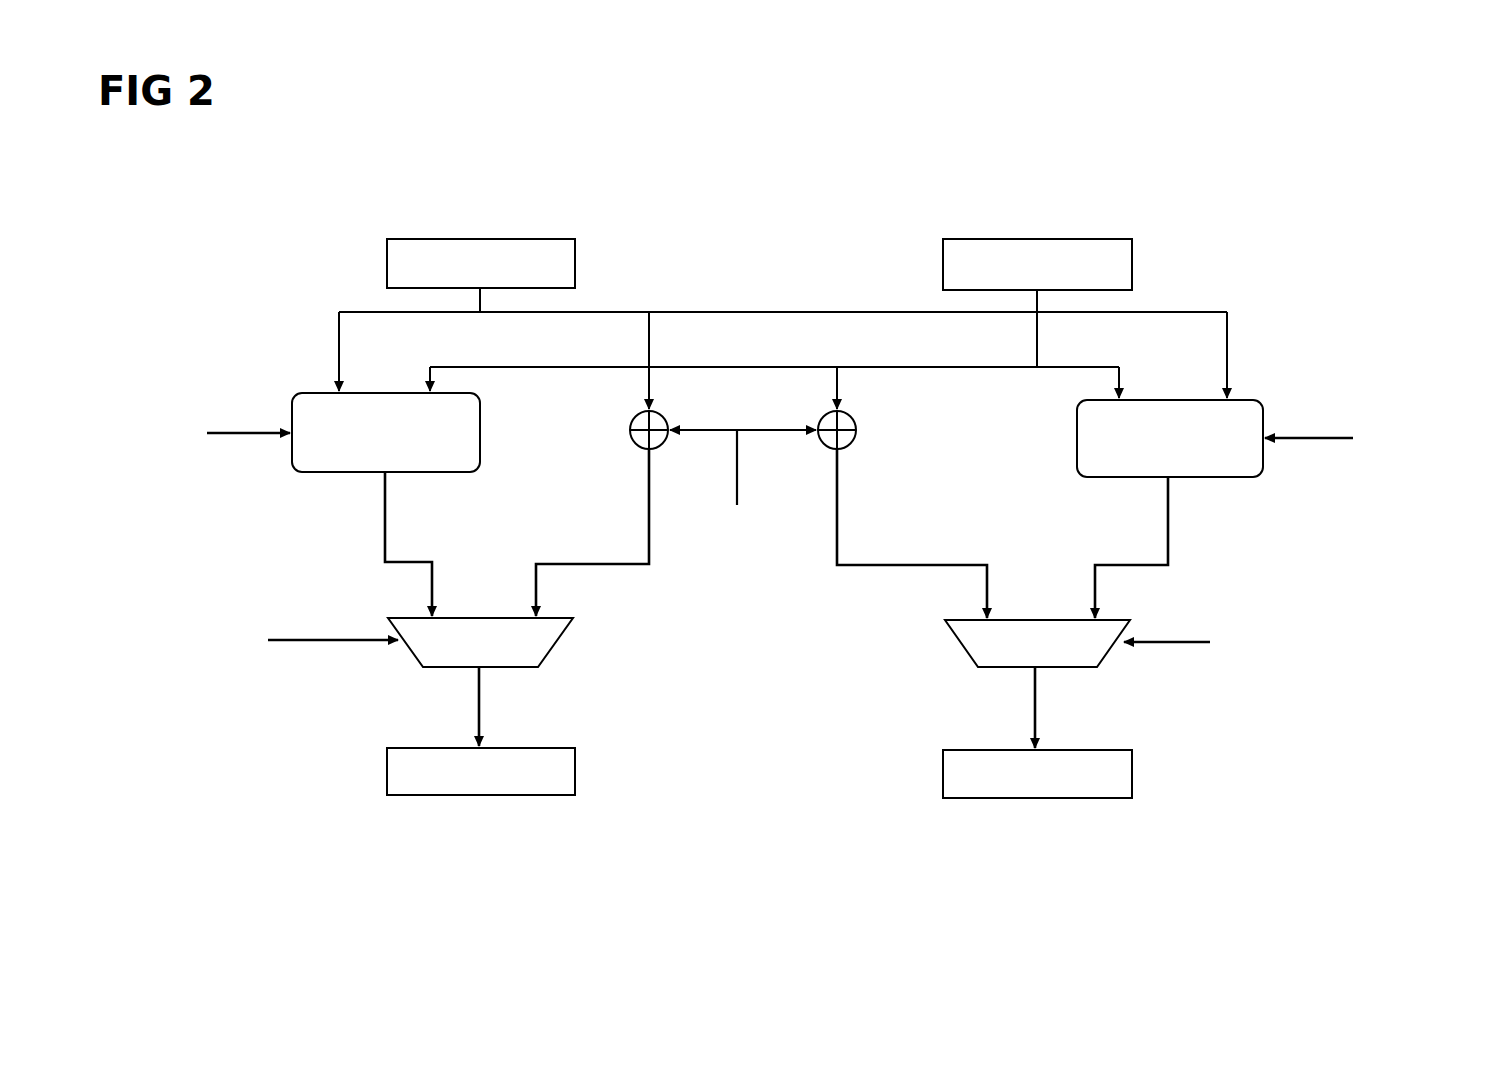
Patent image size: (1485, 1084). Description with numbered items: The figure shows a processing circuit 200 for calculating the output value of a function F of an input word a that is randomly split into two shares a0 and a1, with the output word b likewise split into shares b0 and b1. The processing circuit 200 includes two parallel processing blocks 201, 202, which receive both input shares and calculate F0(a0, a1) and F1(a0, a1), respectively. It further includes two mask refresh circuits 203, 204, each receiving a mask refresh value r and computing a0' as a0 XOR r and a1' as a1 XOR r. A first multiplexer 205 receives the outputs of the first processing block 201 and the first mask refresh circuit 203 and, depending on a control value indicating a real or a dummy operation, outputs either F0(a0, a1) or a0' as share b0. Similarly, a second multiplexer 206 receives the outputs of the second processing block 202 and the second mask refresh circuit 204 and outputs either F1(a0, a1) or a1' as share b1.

The processing circuit 200 is at (1308, 144).
The first processing block 201 is at (480, 427).
The second processing block 202 is at (1257, 402).
The first mask refresh circuit 203 is at (660, 418).
The second mask refresh circuit 204 is at (850, 418).
The first multiplexer 205 is at (553, 652).
The second multiplexer 206 is at (968, 660).